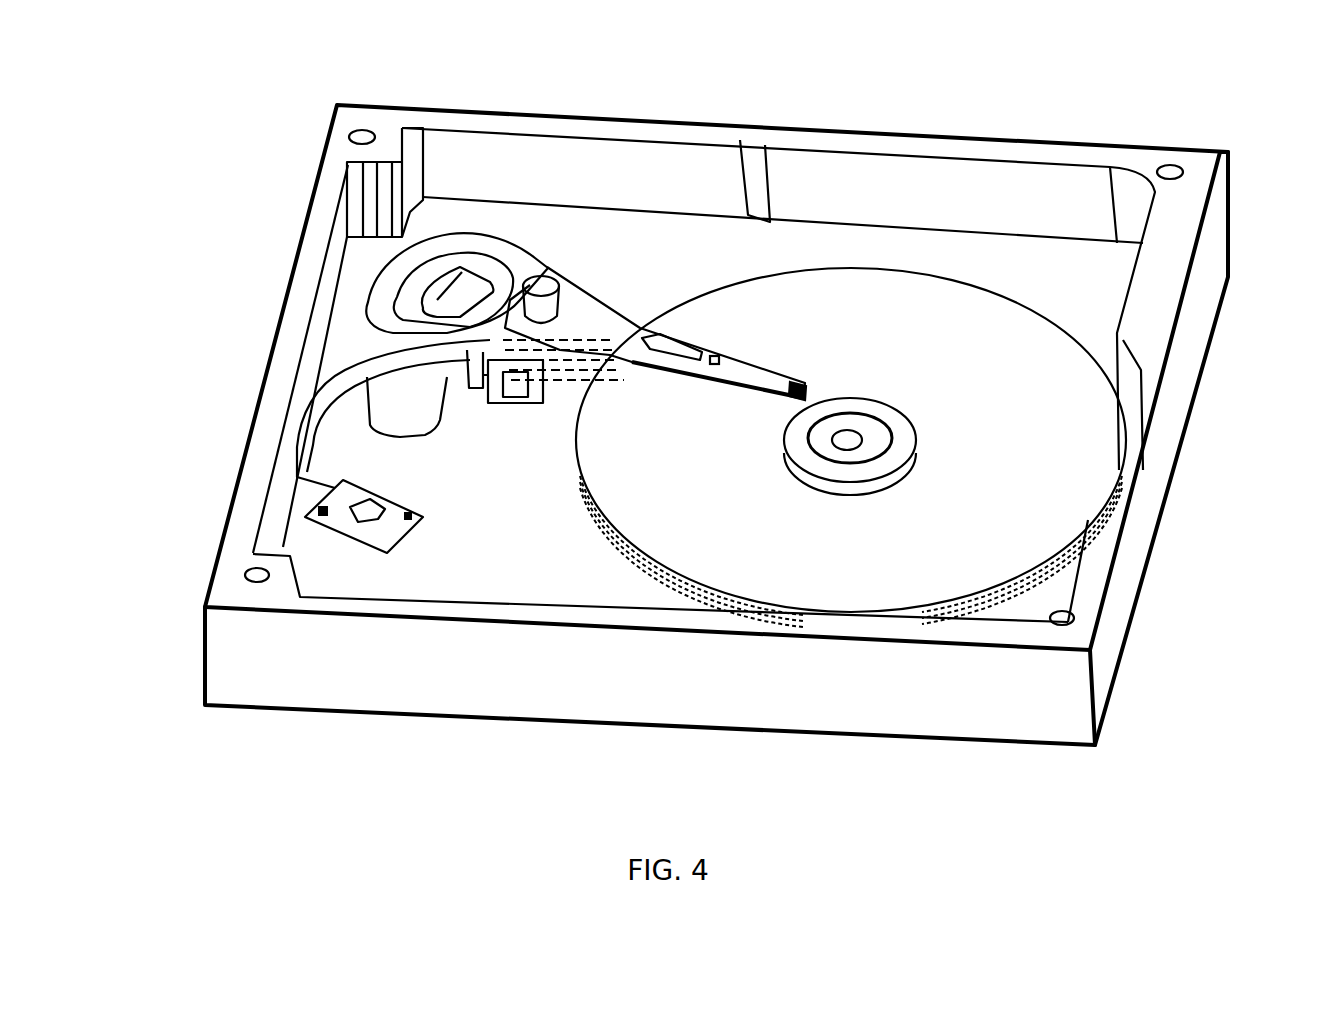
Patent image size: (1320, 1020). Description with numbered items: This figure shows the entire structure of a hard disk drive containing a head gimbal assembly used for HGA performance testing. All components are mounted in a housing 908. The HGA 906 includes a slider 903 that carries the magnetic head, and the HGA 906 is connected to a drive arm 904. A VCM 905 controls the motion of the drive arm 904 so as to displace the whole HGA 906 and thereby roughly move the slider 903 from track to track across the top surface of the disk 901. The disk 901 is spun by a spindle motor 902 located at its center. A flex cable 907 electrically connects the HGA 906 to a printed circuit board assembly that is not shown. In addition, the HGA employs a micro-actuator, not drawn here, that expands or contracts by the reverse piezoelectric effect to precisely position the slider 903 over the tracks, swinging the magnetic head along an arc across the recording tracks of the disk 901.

The disk 901 is at (1093, 416).
The spindle motor 902 is at (913, 433).
The slider 903 is at (818, 385).
The drive arm 904 is at (607, 325).
The VCM 905 is at (463, 237).
The HGA 906 is at (715, 358).
The flex cable 907 is at (357, 380).
The housing 908 is at (1123, 617).